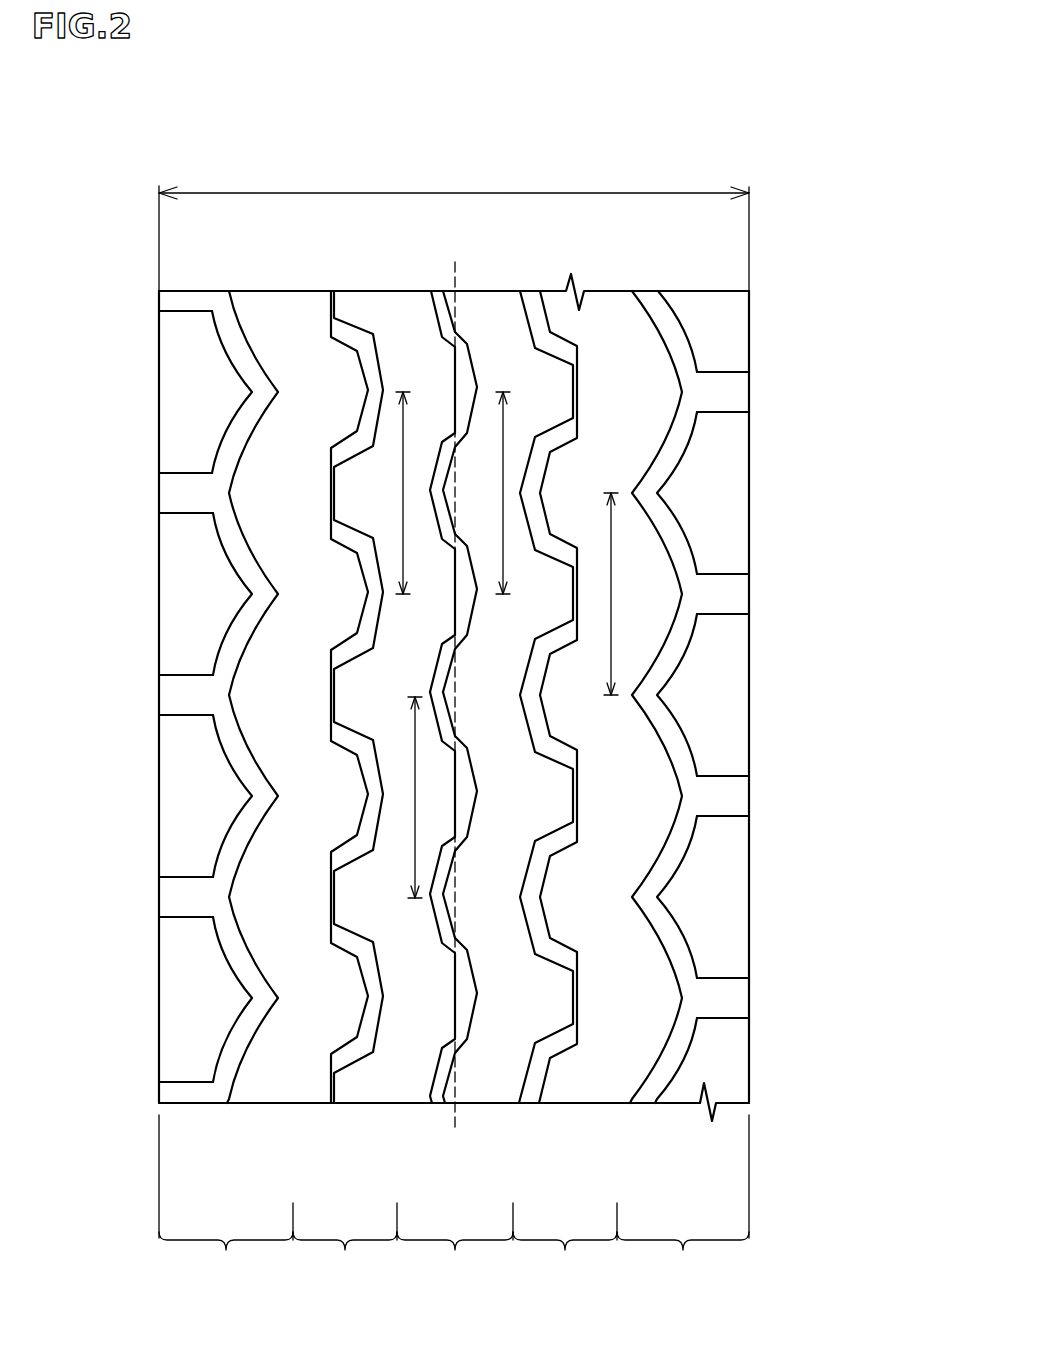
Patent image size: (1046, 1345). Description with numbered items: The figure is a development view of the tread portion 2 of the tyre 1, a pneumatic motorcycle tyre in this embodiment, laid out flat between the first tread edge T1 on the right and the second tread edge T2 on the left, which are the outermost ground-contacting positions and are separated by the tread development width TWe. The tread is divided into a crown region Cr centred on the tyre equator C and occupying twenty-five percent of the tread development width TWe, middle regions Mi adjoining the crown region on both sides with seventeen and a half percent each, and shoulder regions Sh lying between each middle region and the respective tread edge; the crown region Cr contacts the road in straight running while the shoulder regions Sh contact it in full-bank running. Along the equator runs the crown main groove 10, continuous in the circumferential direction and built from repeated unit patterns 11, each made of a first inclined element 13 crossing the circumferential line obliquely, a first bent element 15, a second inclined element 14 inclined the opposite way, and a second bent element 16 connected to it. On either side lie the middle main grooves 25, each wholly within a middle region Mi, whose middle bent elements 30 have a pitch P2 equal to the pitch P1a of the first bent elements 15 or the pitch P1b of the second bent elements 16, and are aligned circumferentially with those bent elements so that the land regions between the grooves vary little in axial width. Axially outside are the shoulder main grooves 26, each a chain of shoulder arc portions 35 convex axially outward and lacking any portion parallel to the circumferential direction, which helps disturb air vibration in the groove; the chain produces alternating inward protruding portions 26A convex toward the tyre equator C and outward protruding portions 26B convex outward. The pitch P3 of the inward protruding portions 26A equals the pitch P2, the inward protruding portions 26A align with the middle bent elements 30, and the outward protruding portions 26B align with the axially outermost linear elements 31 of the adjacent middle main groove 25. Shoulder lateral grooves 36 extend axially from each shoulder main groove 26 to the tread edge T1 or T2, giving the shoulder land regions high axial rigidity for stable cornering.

The tyre 1 is at (790, 147).
The tread portion 2 is at (713, 170).
The crown main groove 10 is at (467, 1022).
The unit patterns 11 is at (834, 716).
The first inclined element 13 is at (457, 748).
The second inclined element 14 is at (458, 848).
The first bent element 15 is at (470, 795).
The second bent element 16 is at (438, 907).
The middle main grooves 25 is at (358, 1057).
The shoulder main grooves 26 is at (235, 1047).
The inward protruding portions 26A is at (262, 382).
The outward protruding portions 26B is at (717, 595).
The middle bent elements 30 is at (533, 470).
The linear elements 31 is at (578, 607).
The shoulder arc portions 35 is at (237, 435).
The shoulder lateral grooves 36 is at (188, 495).
The first tread edge T1 is at (752, 335).
The second tread edge T2 is at (157, 335).
The tread development width TWe is at (454, 226).
The tyre equator C is at (452, 680).
The pitch of the first bent elements P1a is at (505, 447).
The pitch of the second bent elements P1b is at (415, 847).
The pitch of the middle bent elements P2 is at (403, 433).
The pitch of the inward protruding portions P3 is at (612, 555).
The shoulder regions Sh is at (454, 1258).
The middle regions Mi is at (455, 1258).
The crown region Cr is at (455, 1258).